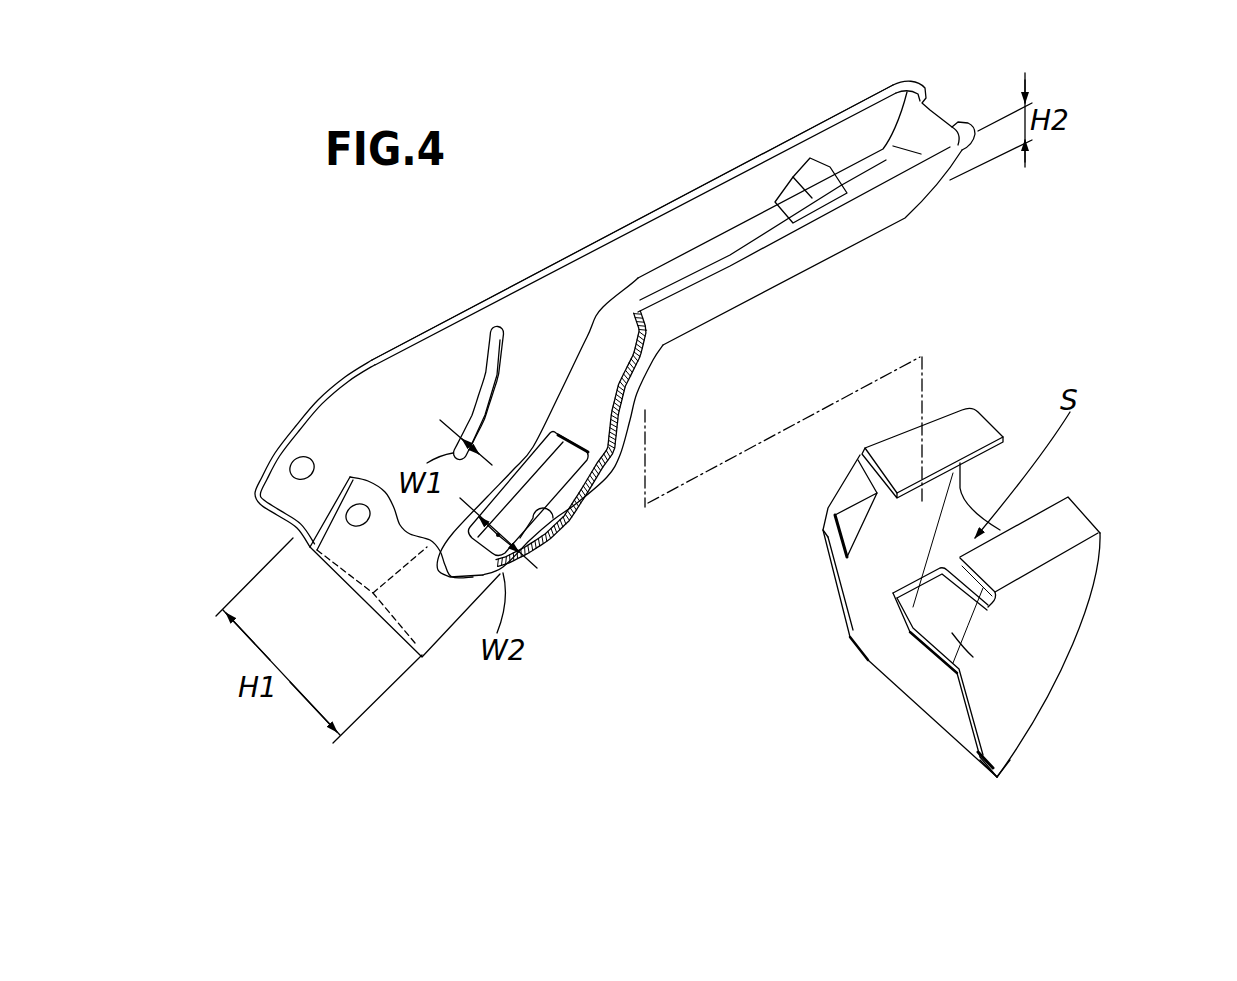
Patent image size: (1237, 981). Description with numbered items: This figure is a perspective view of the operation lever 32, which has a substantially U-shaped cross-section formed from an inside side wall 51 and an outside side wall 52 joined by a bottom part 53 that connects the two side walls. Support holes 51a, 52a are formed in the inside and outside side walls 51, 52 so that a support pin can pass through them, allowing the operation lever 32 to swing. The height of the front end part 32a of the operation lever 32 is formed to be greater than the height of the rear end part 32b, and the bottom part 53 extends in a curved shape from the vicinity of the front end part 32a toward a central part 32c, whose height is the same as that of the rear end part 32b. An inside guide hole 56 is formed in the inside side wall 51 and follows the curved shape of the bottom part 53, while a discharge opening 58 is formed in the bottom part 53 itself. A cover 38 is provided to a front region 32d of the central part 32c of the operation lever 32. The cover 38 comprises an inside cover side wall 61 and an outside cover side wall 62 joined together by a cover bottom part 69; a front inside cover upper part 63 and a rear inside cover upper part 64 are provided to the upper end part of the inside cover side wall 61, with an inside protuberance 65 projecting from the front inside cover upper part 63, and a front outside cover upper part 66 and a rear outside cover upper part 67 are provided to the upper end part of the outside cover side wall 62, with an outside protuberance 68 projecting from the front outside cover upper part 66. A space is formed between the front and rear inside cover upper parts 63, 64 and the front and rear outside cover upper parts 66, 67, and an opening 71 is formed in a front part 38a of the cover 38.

The operation lever 32 is at (680, 187).
The front end part 32a is at (330, 528).
The rear end part 32b is at (937, 177).
The central part 32c is at (593, 273).
The front region 32d is at (530, 293).
The cover 38 is at (1087, 623).
The front part 38a is at (988, 708).
The inside side wall 51 is at (403, 397).
The support hole 51a is at (297, 463).
The outside side wall 52 is at (437, 613).
The support hole 52a is at (357, 527).
The bottom part 53 is at (595, 425).
The inside guide hole 56 is at (493, 383).
The discharge opening 58 is at (535, 512).
The inside cover side wall 61 is at (857, 593).
The outside cover side wall 62 is at (1045, 665).
The front inside cover upper part 63 is at (847, 500).
The rear inside cover upper part 64 is at (903, 453).
The inside protuberance 65 is at (835, 537).
The front outside cover upper part 66 is at (952, 633).
The rear outside cover upper part 67 is at (1067, 517).
The outside protuberance 68 is at (913, 607).
The cover bottom part 69 is at (928, 693).
The opening 71 is at (963, 710).